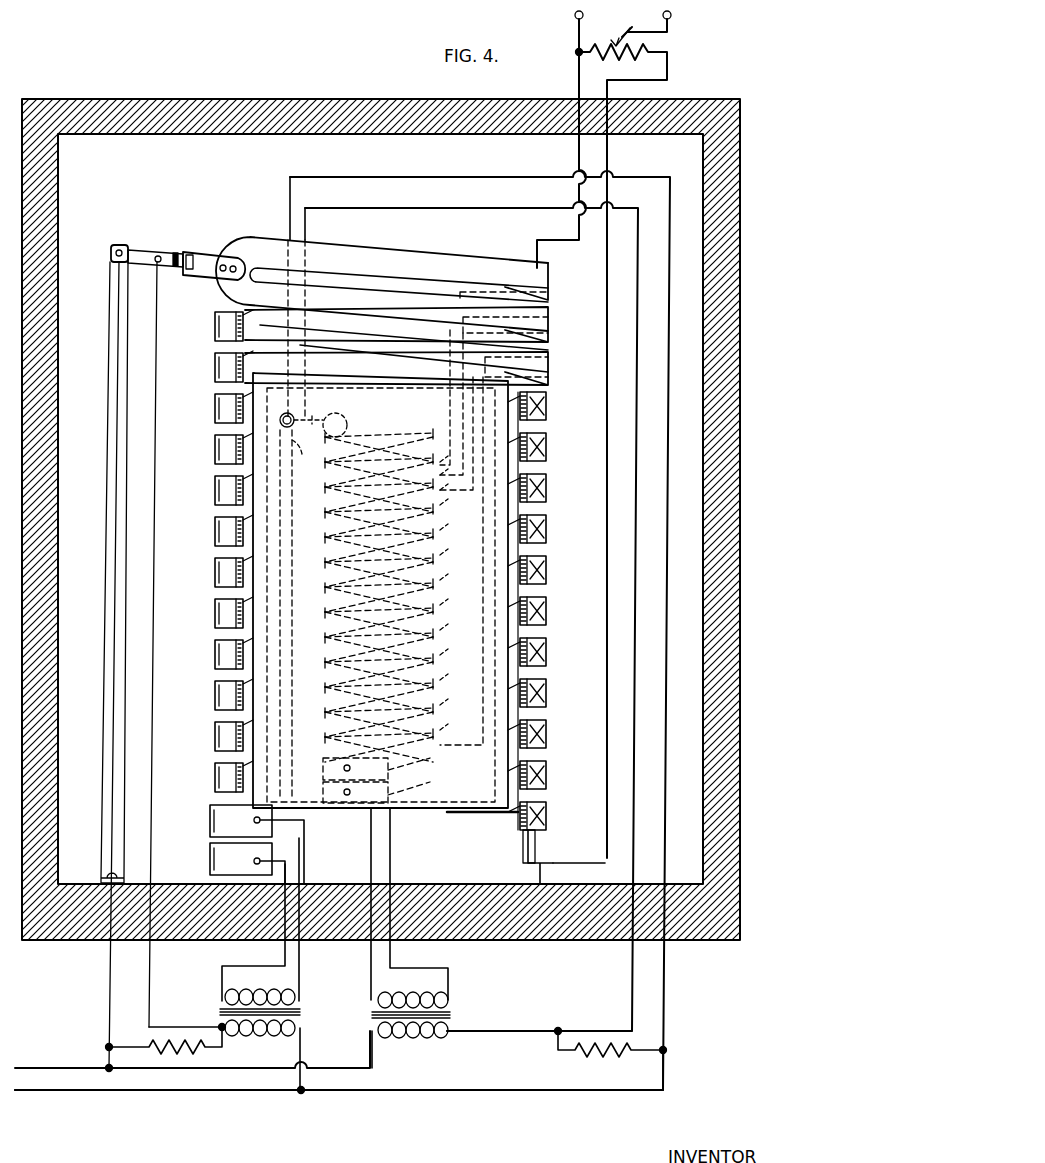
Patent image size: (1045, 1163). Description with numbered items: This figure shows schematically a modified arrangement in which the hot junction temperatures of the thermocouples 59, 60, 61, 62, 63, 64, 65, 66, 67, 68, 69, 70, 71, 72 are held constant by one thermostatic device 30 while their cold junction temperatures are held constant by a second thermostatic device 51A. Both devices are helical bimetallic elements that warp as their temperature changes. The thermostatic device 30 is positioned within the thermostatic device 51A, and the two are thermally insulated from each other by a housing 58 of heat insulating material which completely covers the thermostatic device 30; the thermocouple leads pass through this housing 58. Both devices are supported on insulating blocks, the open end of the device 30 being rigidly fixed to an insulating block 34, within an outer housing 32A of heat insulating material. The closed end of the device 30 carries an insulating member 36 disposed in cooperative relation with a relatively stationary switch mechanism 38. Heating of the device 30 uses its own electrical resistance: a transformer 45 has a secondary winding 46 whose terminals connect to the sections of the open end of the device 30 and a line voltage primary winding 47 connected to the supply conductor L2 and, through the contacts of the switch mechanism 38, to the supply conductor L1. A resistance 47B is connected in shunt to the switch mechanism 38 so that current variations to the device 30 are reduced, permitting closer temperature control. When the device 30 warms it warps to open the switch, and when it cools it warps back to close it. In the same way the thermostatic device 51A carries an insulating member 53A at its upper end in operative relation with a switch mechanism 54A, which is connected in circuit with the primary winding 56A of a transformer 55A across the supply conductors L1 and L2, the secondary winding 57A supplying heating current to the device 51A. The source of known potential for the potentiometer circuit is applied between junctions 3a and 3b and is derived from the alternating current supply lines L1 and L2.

The housing 32A is at (330, 99).
The junction 3a is at (575, 16).
The junction 3b is at (671, 15).
The switch mechanism 54A is at (151, 252).
The insulating member 53A is at (206, 260).
The thermostatic device 51A is at (426, 260).
The housing 58 is at (256, 397).
The thermocouple 59 is at (549, 270).
The thermocouple 60 is at (549, 310).
The thermocouple 61 is at (549, 355).
The thermocouple 62 is at (547, 398).
The thermocouple 63 is at (547, 439).
The thermocouple 64 is at (547, 480).
The thermocouple 65 is at (547, 521).
The thermocouple 66 is at (547, 562).
The thermocouple 67 is at (547, 603).
The thermocouple 68 is at (547, 644).
The thermocouple 69 is at (547, 685).
The thermocouple 70 is at (547, 726).
The thermocouple 71 is at (547, 767).
The thermocouple 72 is at (547, 808).
The thermostatic device 30 is at (382, 415).
The member 36 is at (304, 422).
The switch mechanism 38 is at (302, 442).
The insulating block 34 is at (417, 795).
The transformer 55A is at (214, 1010).
The secondary winding 57A is at (286, 992).
The primary winding 56A is at (270, 1034).
The transformer 45 is at (454, 1016).
The secondary winding 46 is at (396, 996).
The primary winding 47 is at (436, 1042).
The resistance 47B is at (602, 1054).
The supply conductor L1 is at (55, 1091).
The supply conductor L2 is at (36, 1069).